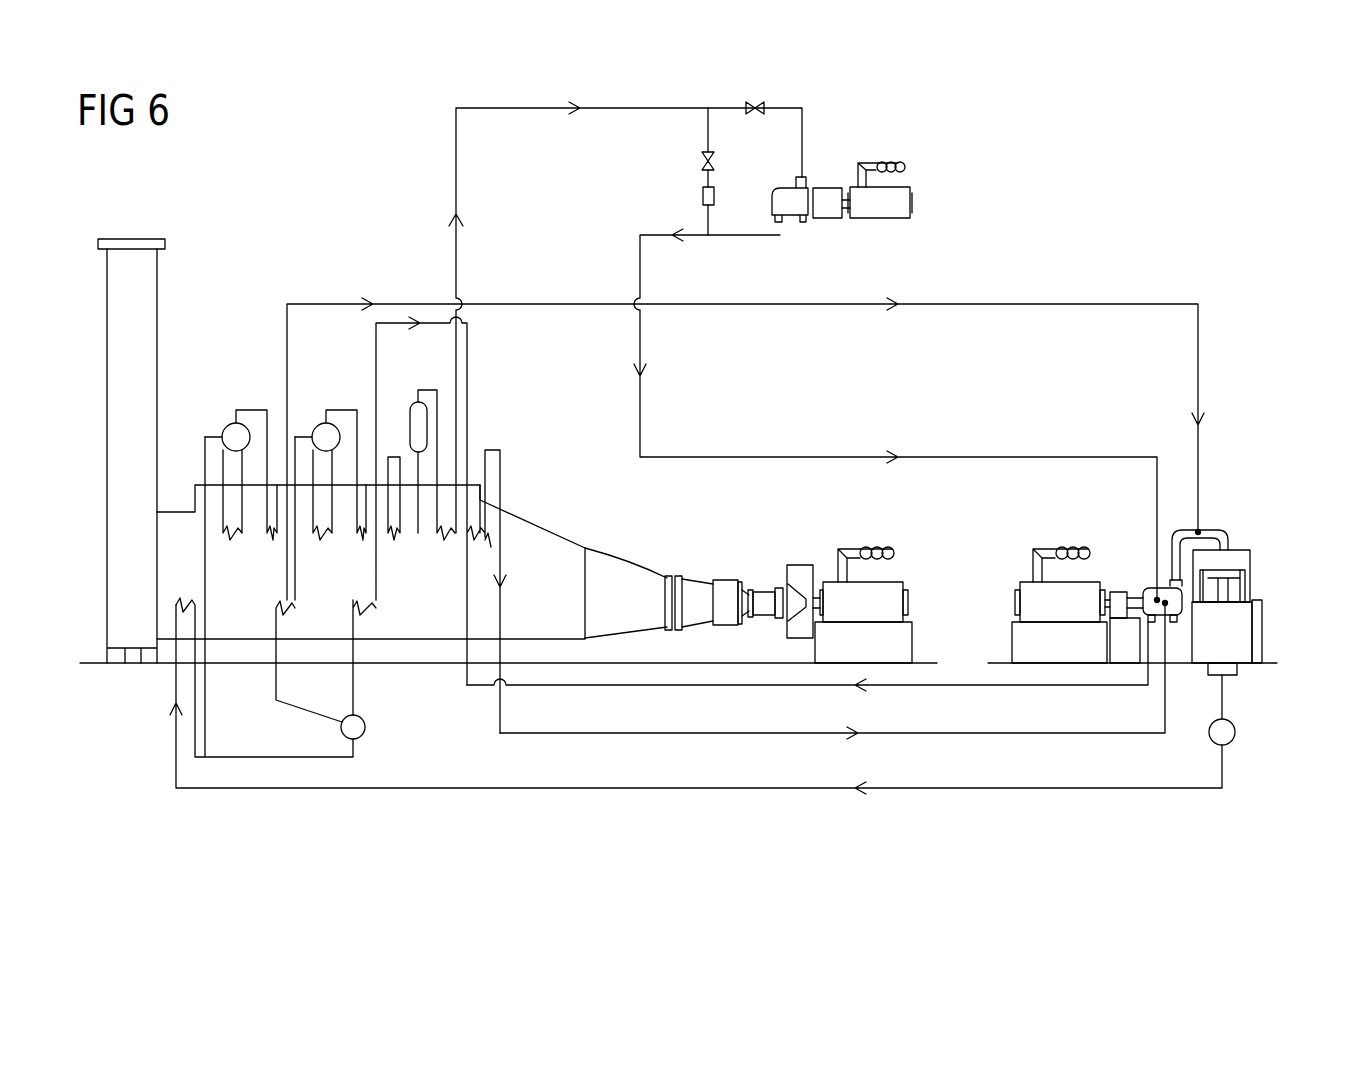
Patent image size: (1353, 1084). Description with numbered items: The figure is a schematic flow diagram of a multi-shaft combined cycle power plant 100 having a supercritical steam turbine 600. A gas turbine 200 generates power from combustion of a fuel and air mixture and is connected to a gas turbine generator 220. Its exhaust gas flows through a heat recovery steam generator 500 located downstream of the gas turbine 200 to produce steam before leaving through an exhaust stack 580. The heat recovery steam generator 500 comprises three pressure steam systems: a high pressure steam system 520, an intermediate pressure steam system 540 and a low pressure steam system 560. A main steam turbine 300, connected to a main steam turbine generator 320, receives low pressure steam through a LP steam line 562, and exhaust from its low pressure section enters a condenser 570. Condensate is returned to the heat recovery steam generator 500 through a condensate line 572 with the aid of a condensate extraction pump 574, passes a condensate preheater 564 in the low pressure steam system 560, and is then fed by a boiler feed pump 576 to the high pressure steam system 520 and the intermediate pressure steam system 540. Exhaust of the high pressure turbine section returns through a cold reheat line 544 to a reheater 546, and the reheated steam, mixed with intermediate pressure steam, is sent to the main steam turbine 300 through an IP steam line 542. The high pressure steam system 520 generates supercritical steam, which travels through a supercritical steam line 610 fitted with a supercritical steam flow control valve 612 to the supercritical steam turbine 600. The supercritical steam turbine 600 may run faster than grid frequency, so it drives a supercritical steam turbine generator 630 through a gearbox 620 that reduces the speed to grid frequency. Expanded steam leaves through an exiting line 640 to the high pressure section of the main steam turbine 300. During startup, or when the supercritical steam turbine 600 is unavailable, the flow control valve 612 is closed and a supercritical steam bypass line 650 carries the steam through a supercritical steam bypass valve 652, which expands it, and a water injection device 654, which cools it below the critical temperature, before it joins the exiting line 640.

The combined cycle power plant 100 is at (1110, 113).
The gas turbine 200 is at (725, 578).
The gas turbine generator 220 is at (893, 580).
The main steam turbine 300 is at (1200, 530).
The main steam turbine generator 320 is at (1090, 580).
The heat recovery steam generator 500 is at (324, 256).
The high pressure steam system 520 is at (414, 391).
The intermediate pressure steam system 540 is at (338, 396).
The low pressure steam system 560 is at (238, 396).
The LP steam line 562 is at (1037, 304).
The condensate preheater 564 is at (185, 600).
The condenser 570 is at (1252, 627).
The condensate line 572 is at (1018, 793).
The condensate extraction pump 574 is at (1235, 730).
The boiler feed pump 576 is at (365, 726).
The exhaust stack 580 is at (157, 292).
The IP steam line 542 is at (1018, 738).
The cold reheat line 544 is at (1018, 688).
The reheater 546 is at (498, 448).
The supercritical steam turbine 600 is at (790, 207).
The supercritical steam line 610 is at (455, 166).
The supercritical steam flow control valve 612 is at (757, 100).
The gearbox 620 is at (830, 185).
The supercritical steam turbine generator 630 is at (913, 200).
The exiting line 640 is at (639, 348).
The supercritical steam bypass line 650 is at (710, 137).
The supercritical steam bypass valve 652 is at (702, 162).
The water injection device 654 is at (703, 194).